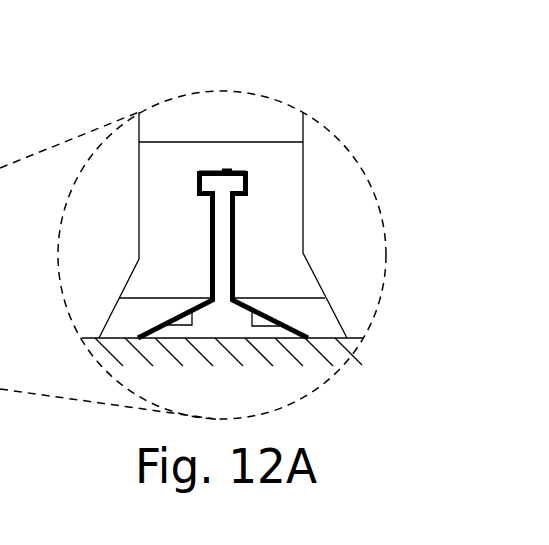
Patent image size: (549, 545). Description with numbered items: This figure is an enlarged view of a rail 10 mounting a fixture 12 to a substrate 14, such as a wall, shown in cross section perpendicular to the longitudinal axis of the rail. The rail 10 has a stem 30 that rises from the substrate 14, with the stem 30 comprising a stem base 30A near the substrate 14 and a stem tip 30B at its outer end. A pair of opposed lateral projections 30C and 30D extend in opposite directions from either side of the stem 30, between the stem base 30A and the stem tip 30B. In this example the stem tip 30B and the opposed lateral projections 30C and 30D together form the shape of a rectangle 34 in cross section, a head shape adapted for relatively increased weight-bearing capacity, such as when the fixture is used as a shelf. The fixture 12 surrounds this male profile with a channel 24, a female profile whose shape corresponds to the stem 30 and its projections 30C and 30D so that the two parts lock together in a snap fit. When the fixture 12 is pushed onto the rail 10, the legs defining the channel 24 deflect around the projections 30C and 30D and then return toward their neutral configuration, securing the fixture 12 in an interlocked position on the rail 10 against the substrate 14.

The rail 10 is at (270, 233).
The fixture 12 is at (213, 229).
The substrate 14 is at (350, 338).
The channel 24 is at (233, 177).
The stem 30 is at (236, 272).
The stem base 30A is at (236, 288).
The stem tip 30B is at (234, 141).
The lateral projection 30C is at (197, 183).
The lateral projection 30D is at (248, 185).
The rectangle 34 is at (227, 171).